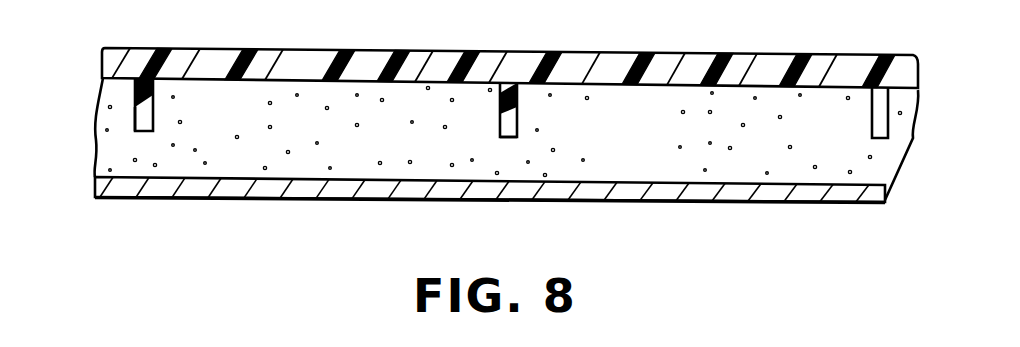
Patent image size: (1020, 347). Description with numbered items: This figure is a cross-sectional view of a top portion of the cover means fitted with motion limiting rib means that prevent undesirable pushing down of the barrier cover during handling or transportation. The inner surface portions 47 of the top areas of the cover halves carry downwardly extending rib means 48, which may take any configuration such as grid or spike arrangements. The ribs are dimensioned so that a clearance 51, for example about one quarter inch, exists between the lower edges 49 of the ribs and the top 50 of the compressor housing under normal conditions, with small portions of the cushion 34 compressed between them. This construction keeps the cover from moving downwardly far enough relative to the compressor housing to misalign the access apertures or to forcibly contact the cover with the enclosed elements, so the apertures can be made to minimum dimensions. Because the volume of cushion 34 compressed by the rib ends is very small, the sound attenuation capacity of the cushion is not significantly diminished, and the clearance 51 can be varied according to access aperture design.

The cushion 34 is at (230, 155).
The inner surface portions 47 is at (344, 74).
The rib means 48 is at (153, 113).
The lower edges 49 is at (507, 138).
The top of compressor housing 50 is at (713, 188).
The clearance 51 is at (136, 130).